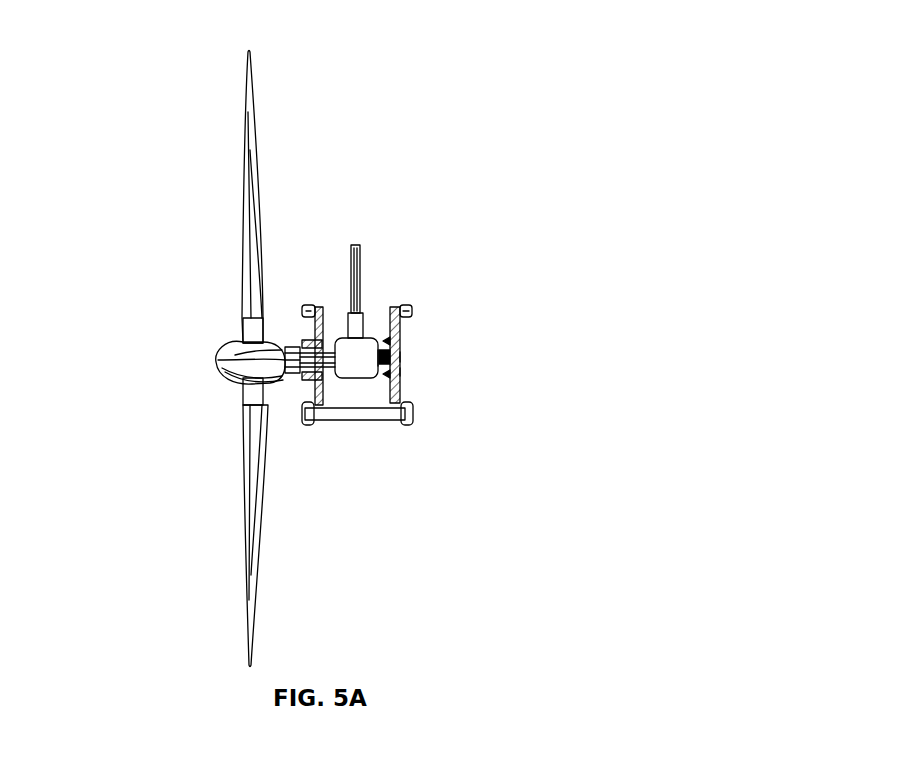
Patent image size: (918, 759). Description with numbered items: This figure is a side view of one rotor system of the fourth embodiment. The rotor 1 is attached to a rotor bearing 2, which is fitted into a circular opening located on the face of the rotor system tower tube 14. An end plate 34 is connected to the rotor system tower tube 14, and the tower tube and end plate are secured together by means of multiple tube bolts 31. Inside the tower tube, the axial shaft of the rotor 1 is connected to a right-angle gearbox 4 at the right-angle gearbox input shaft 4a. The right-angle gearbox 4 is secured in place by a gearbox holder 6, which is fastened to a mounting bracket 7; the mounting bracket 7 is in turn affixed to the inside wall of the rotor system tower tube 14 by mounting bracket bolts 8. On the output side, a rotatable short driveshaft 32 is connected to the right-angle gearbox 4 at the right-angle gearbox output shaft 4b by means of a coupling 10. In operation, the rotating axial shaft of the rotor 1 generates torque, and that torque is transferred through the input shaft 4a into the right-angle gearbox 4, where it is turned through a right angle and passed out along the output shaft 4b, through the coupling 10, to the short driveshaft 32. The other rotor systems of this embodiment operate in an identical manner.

The rotor 1 is at (237, 353).
The rotor bearing 2 is at (313, 388).
The right-angle gearbox 4 is at (352, 362).
The right-angle gearbox input shaft 4a is at (333, 355).
The right-angle gearbox output shaft 4b is at (378, 345).
The gearbox holder 6 is at (400, 357).
The mounting bracket 7 is at (400, 372).
The mounting bracket bolts 8 is at (397, 337).
The coupling 10 is at (370, 337).
The rotor system tower tube 14 is at (400, 330).
The tube bolts 31 is at (305, 310).
The short driveshaft 32 is at (360, 243).
The end plate 34 is at (373, 413).